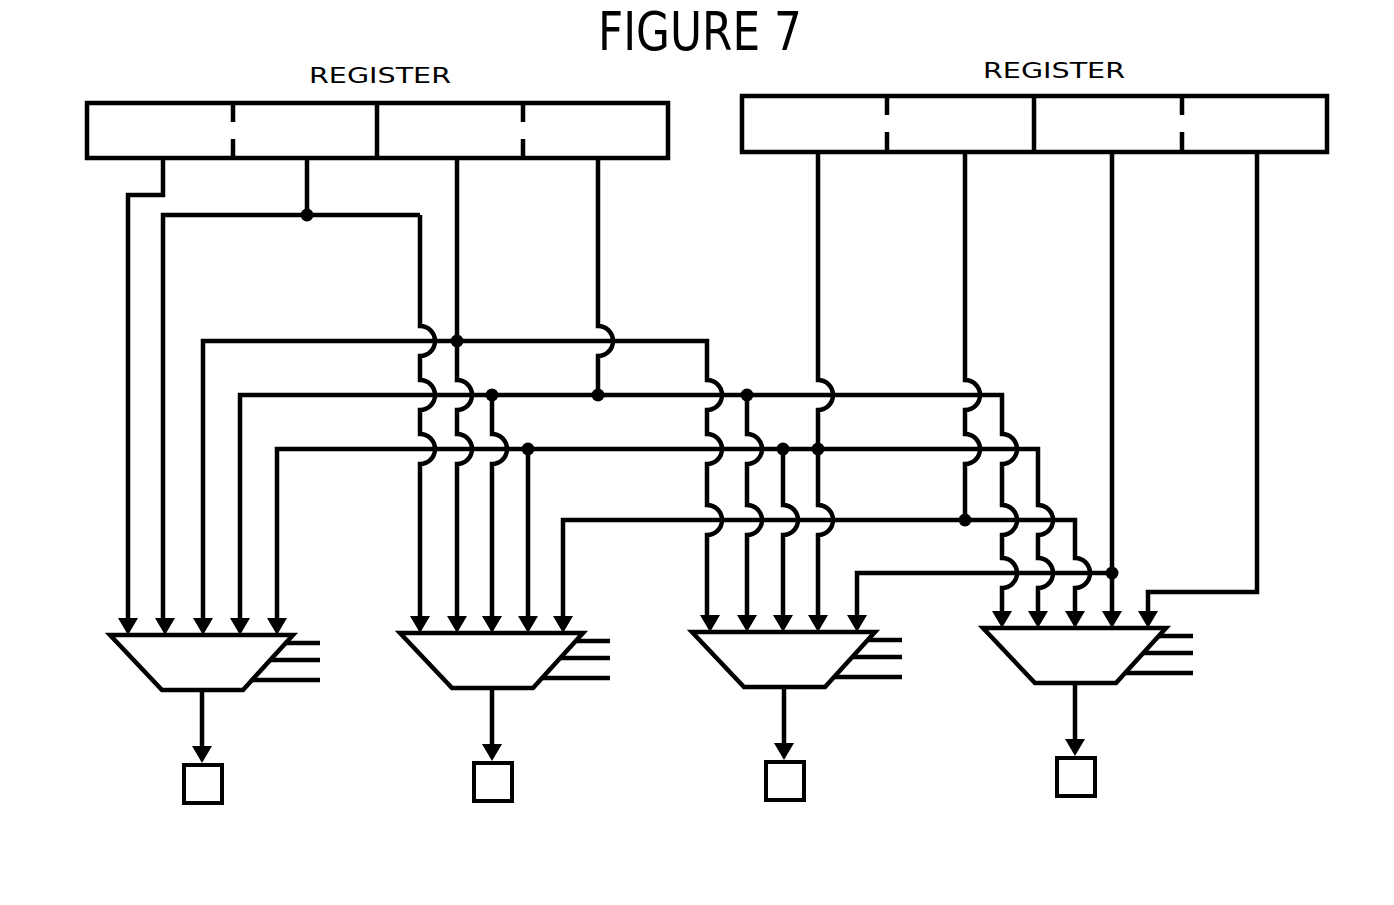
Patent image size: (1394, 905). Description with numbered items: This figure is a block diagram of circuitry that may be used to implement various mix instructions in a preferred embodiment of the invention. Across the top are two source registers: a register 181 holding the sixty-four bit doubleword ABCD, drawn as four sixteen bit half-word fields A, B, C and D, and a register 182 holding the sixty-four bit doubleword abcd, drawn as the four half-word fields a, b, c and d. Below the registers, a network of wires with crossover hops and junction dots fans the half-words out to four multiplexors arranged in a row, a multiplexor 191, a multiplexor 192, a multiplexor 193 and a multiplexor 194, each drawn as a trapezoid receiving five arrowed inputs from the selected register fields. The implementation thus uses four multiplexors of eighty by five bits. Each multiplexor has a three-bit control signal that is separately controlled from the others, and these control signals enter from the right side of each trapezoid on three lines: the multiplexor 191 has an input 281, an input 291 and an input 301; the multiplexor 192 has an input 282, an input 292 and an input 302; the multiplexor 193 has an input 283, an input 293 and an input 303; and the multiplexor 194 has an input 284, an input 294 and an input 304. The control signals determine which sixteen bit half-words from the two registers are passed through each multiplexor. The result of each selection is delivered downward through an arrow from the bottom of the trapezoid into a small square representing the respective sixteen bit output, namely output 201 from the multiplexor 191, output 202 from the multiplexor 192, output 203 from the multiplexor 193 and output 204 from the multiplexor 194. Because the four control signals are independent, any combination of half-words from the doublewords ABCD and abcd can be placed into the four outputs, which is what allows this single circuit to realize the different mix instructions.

The register 181 is at (668, 118).
The register 182 is at (1327, 96).
The multiplexor 191 is at (245, 692).
The multiplexor 192 is at (491, 697).
The multiplexor 193 is at (783, 696).
The multiplexor 194 is at (1074, 692).
The sixteen bit output 201 is at (222, 783).
The sixteen bit output 202 is at (519, 799).
The sixteen bit output 203 is at (810, 798).
The sixteen bit output 204 is at (1102, 794).
The input 281 is at (308, 643).
The input 282 is at (629, 614).
The input 283 is at (921, 613).
The input 284 is at (1212, 618).
The input 291 is at (320, 658).
The input 292 is at (620, 660).
The input 293 is at (912, 659).
The input 294 is at (1203, 655).
The input 301 is at (308, 682).
The input 302 is at (617, 697).
The input 303 is at (909, 696).
The input 304 is at (1200, 692).